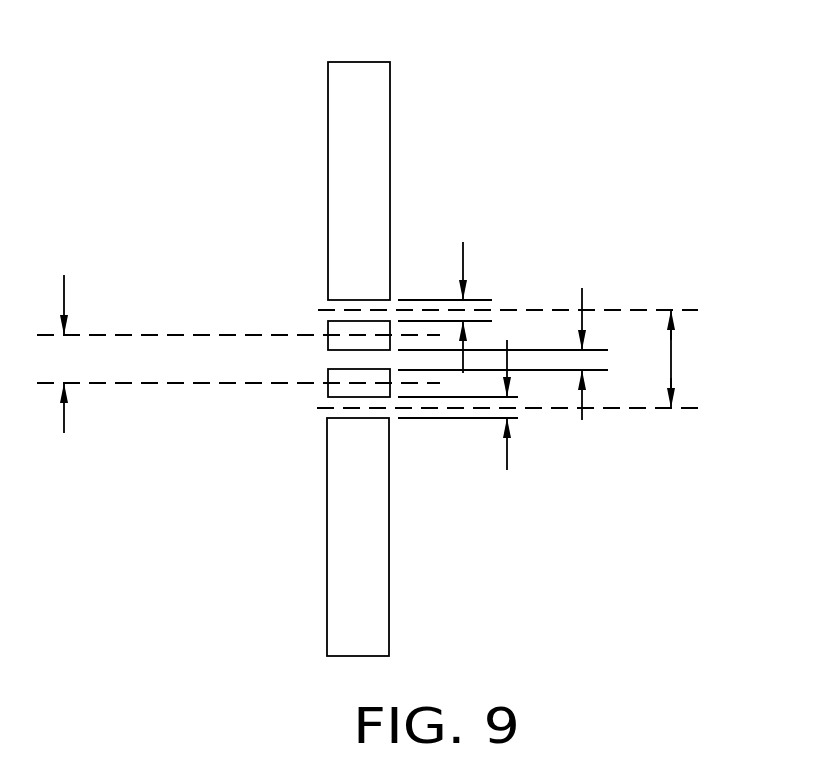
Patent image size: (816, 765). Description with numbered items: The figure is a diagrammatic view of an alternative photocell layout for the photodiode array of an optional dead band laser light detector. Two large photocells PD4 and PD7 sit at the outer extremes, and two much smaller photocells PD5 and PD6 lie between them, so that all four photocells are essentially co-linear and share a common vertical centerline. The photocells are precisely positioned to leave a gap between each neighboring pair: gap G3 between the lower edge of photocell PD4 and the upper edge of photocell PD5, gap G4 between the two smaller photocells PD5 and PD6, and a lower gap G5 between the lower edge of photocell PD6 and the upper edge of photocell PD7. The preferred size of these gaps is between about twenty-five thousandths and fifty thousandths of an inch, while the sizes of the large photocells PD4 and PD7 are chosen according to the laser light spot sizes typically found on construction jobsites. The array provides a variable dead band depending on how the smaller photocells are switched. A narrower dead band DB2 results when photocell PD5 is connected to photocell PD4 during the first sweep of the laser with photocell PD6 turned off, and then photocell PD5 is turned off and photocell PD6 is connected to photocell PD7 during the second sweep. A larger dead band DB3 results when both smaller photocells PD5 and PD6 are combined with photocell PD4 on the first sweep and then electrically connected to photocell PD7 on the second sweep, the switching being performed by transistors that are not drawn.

The photocell PD4 is at (378, 99).
The photocell PD5 is at (327, 330).
The photocell PD6 is at (327, 387).
The photocell PD7 is at (383, 598).
The gap G3 is at (465, 257).
The gap G4 is at (583, 302).
The gap G5 is at (507, 455).
The dead band DB2 is at (69, 334).
The dead band DB3 is at (671, 355).